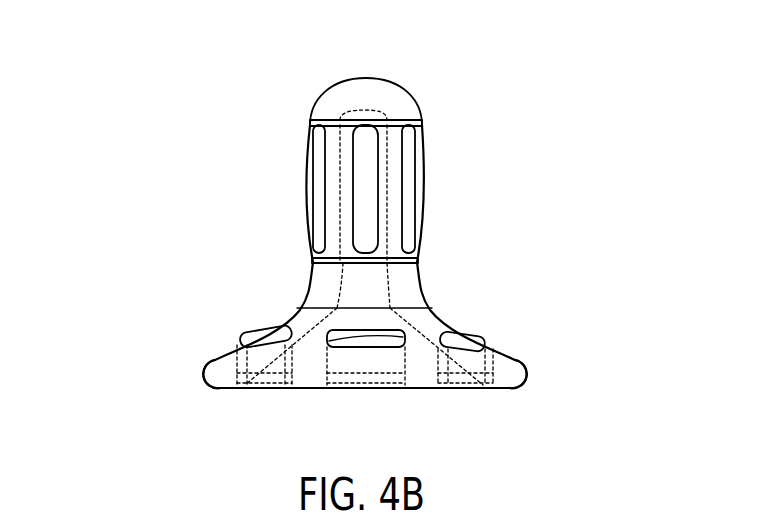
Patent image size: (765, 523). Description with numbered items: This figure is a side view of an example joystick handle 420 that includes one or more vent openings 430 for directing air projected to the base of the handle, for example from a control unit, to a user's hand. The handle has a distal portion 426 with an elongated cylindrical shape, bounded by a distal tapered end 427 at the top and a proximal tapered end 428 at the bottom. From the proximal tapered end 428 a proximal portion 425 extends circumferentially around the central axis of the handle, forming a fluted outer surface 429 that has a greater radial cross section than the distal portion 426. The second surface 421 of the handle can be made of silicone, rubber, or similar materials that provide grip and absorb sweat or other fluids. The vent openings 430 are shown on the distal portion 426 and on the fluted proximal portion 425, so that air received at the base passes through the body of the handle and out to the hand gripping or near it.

The joystick handle 420 is at (152, 66).
The second surface 421 is at (345, 100).
The distal tapered end 427 is at (392, 103).
The distal portion 426 is at (452, 85).
The vent openings 430 is at (367, 191).
The proximal tapered end 428 is at (402, 277).
The fluted outer surface 429 is at (513, 352).
The proximal portion 425 is at (565, 302).